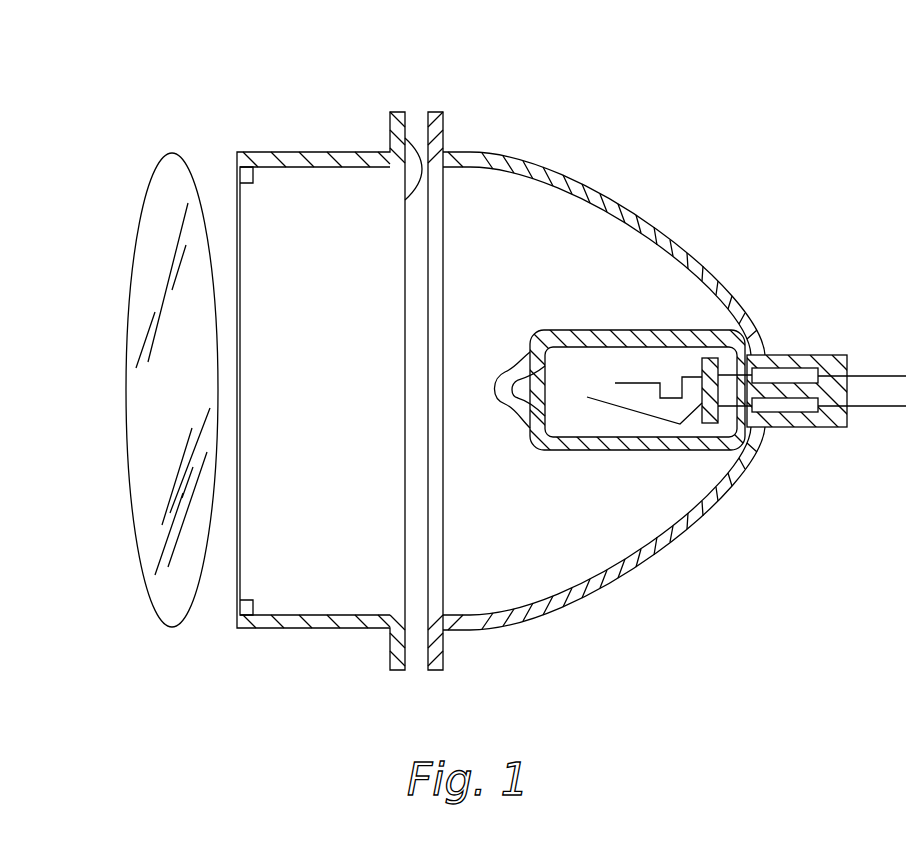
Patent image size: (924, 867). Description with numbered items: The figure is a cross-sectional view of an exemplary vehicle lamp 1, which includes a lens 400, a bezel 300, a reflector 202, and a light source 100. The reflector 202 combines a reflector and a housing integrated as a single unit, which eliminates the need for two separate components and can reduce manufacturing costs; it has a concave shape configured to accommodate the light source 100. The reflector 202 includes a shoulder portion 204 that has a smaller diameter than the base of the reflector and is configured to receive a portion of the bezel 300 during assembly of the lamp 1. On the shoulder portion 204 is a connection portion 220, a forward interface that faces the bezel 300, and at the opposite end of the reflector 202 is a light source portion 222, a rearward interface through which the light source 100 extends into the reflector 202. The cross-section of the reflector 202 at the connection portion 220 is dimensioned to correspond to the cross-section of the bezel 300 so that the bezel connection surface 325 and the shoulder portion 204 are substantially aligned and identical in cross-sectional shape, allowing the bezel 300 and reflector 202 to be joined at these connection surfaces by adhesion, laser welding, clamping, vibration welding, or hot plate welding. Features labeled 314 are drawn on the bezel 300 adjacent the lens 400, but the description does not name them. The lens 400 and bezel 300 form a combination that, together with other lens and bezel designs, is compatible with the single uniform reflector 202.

The lamp 1 is at (200, 108).
The light source 100 is at (643, 454).
The reflector 202 is at (633, 197).
The shoulder portion 204 is at (421, 138).
The connection portion 220 is at (453, 630).
The light source portion 222 is at (767, 342).
The bezel 300 is at (322, 628).
The retaining tab 314 is at (253, 175).
The bezel connection surface 325 is at (405, 198).
The lens 400 is at (177, 295).